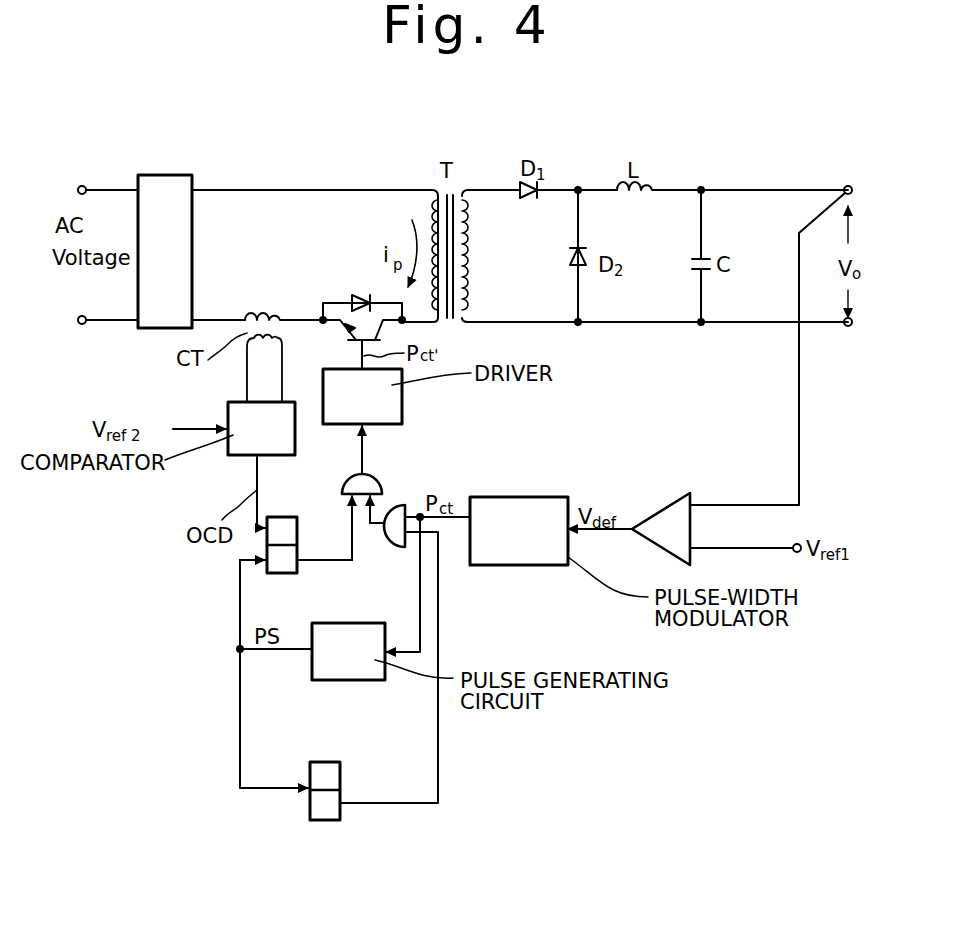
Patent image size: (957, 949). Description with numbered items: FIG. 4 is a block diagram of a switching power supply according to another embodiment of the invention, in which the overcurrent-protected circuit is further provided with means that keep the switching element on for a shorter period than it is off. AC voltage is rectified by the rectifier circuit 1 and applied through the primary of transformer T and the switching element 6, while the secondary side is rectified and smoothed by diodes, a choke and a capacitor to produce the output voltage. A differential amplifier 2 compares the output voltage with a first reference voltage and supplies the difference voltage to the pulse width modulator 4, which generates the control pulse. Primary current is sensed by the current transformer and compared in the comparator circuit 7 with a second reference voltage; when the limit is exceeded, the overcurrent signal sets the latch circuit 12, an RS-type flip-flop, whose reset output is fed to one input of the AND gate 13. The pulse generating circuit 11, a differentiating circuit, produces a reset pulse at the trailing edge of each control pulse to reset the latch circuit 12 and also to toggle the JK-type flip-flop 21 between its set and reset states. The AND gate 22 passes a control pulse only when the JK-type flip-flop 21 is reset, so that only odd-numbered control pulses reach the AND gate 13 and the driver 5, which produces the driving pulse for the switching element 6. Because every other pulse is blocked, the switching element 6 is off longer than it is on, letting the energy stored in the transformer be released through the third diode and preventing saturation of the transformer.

The rectifier circuit 1 is at (170, 187).
The differential amplifier 2 is at (677, 493).
The pulse width modulator 4 is at (535, 507).
The driver 5 is at (393, 402).
The switching element 6 is at (347, 333).
The comparator circuit 7 is at (230, 440).
The pulse generating circuit 11 is at (345, 663).
The latch circuit 12 is at (283, 517).
The AND gate 13 is at (383, 482).
The JK-type flip-flop 21 is at (340, 770).
The AND gate 22 is at (408, 507).